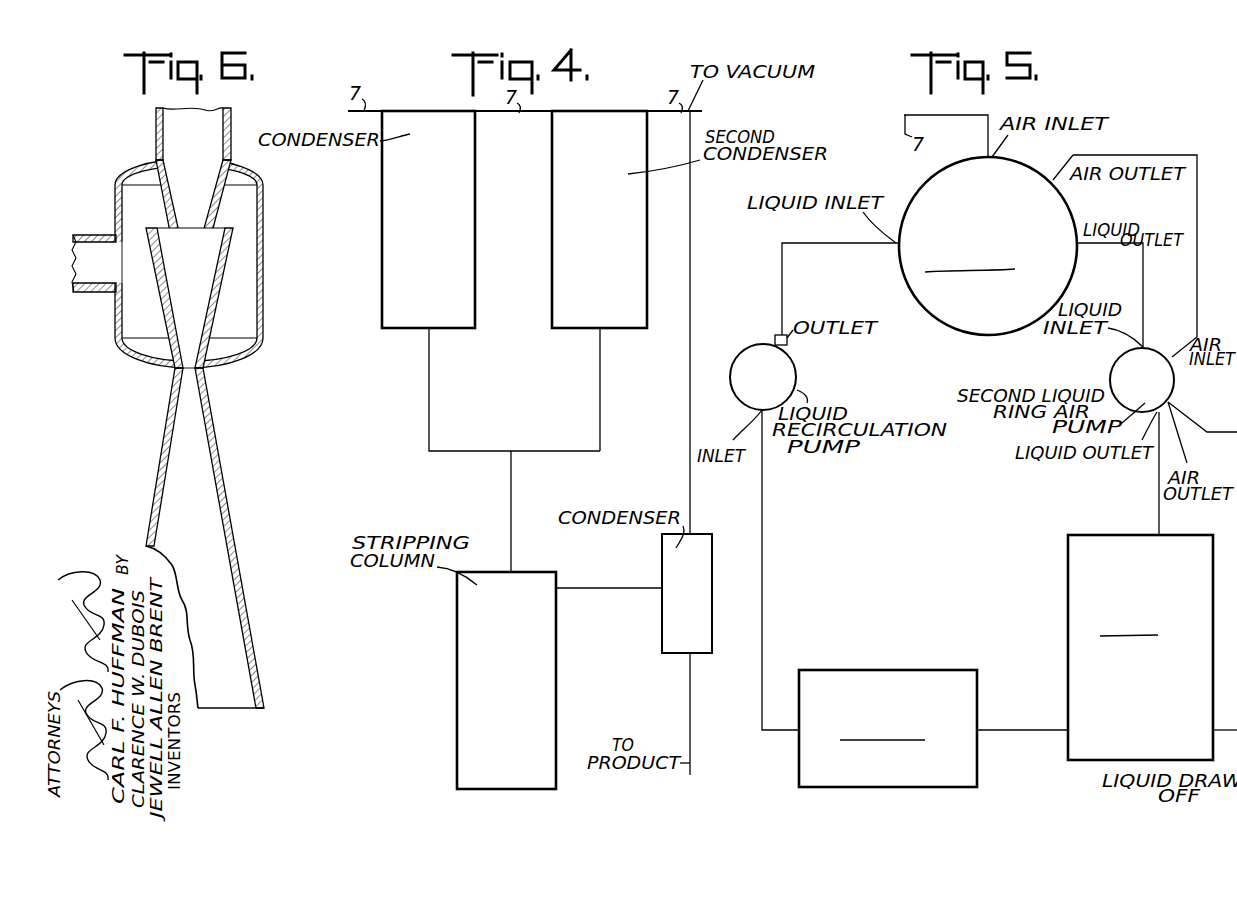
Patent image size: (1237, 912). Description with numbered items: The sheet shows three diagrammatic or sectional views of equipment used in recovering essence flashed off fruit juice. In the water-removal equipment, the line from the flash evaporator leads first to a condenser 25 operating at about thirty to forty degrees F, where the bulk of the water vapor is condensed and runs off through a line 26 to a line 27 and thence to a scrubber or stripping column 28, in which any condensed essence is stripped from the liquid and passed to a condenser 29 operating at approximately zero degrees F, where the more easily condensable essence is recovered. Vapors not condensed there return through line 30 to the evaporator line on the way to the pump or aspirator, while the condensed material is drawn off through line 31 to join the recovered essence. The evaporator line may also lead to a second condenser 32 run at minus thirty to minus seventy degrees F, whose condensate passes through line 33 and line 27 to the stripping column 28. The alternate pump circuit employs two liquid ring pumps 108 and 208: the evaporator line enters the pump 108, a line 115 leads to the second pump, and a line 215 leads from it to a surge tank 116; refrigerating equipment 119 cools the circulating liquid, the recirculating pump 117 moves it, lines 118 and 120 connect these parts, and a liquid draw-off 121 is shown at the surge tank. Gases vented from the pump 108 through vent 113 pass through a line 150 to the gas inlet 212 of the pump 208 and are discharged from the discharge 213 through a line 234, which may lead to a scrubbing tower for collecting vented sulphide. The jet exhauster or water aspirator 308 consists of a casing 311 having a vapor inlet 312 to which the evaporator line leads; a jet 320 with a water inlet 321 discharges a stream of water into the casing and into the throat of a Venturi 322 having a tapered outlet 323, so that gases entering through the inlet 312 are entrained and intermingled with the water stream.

In FIG. 4, the condenser 25 is at (455, 200).
In FIG. 4, the line 26 is at (431, 380).
In FIG. 4, the line 27 is at (513, 508).
In FIG. 4, the scrubber or stripping column 28 is at (558, 670).
In FIG. 4, the condenser 29 is at (713, 585).
In FIG. 4, the line 30 is at (692, 433).
In FIG. 4, the line 31 is at (692, 700).
In FIG. 4, the second condenser 32 is at (628, 200).
In FIG. 4, the line 33 is at (603, 378).
In FIG. 5, the liquid ring pump 108 is at (1050, 213).
In FIG. 5, the vent 113 is at (1053, 180).
In FIG. 5, the line 115 is at (1143, 282).
In FIG. 5, the surge tank 116 is at (1080, 578).
In FIG. 5, the recirculating pump 117 is at (785, 373).
In FIG. 5, the line 118 is at (837, 243).
In FIG. 5, the refrigerating equipment 119 is at (894, 678).
In FIG. 5, the line 120 is at (765, 522).
In FIG. 5, the liquid draw off line 121 is at (1220, 762).
In FIG. 5, the line 150 is at (1125, 155).
In FIG. 5, the liquid ring pump 208 is at (1125, 383).
In FIG. 5, the gas inlet 212 is at (1174, 356).
In FIG. 5, the discharge 213 is at (1175, 400).
In FIG. 5, the line 215 is at (1159, 476).
In FIG. 5, the line 234 is at (1210, 437).
In FIG. 6, the jet exhauster or water aspirator 308 is at (217, 263).
In FIG. 6, the casing 311 is at (263, 228).
In FIG. 6, the vapor inlet 312 is at (90, 252).
In FIG. 6, the jet 320 is at (222, 203).
In FIG. 6, the water inlet 321 is at (212, 115).
In FIG. 6, the Venturi 322 is at (220, 307).
In FIG. 6, the tapered outlet 323 is at (228, 494).